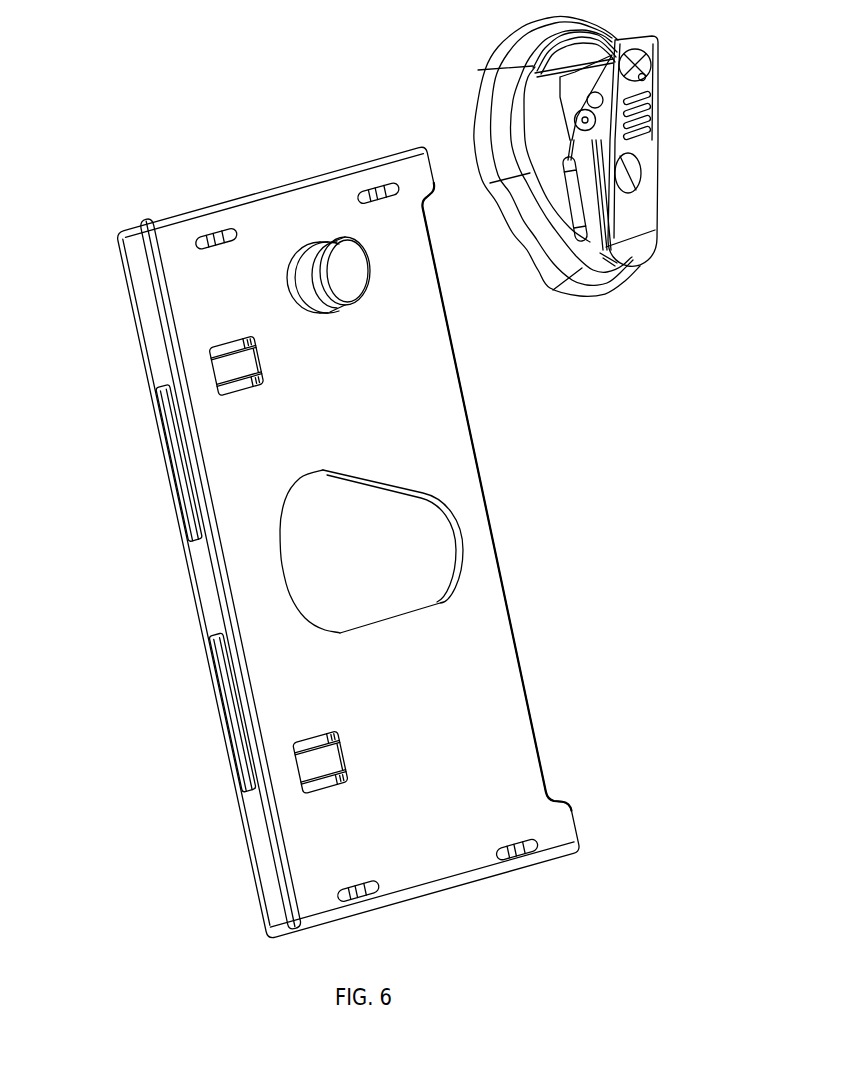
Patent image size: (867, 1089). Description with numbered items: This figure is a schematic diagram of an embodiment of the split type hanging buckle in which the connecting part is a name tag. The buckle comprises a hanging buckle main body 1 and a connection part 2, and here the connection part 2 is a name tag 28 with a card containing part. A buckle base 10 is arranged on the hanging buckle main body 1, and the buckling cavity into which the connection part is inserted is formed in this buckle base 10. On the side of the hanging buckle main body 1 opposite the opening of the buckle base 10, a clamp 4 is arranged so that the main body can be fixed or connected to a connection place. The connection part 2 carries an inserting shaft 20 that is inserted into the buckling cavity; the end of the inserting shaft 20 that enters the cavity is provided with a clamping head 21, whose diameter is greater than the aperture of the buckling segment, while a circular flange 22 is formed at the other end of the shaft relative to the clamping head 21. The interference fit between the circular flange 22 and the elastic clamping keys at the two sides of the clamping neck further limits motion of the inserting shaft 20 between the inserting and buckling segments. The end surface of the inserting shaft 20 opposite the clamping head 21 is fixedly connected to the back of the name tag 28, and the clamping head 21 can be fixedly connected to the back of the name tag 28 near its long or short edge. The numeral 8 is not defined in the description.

The hanging buckle main body 1 is at (478, 101).
The connection part 2 is at (499, 554).
The clamp 4 is at (637, 204).
The inner housing 8 is at (596, 32).
The buckle base 10 is at (553, 289).
The inserting shaft 20 is at (315, 298).
The clamping head 21 is at (315, 265).
The circular flange 22 is at (292, 279).
The name tag 28 is at (252, 540).